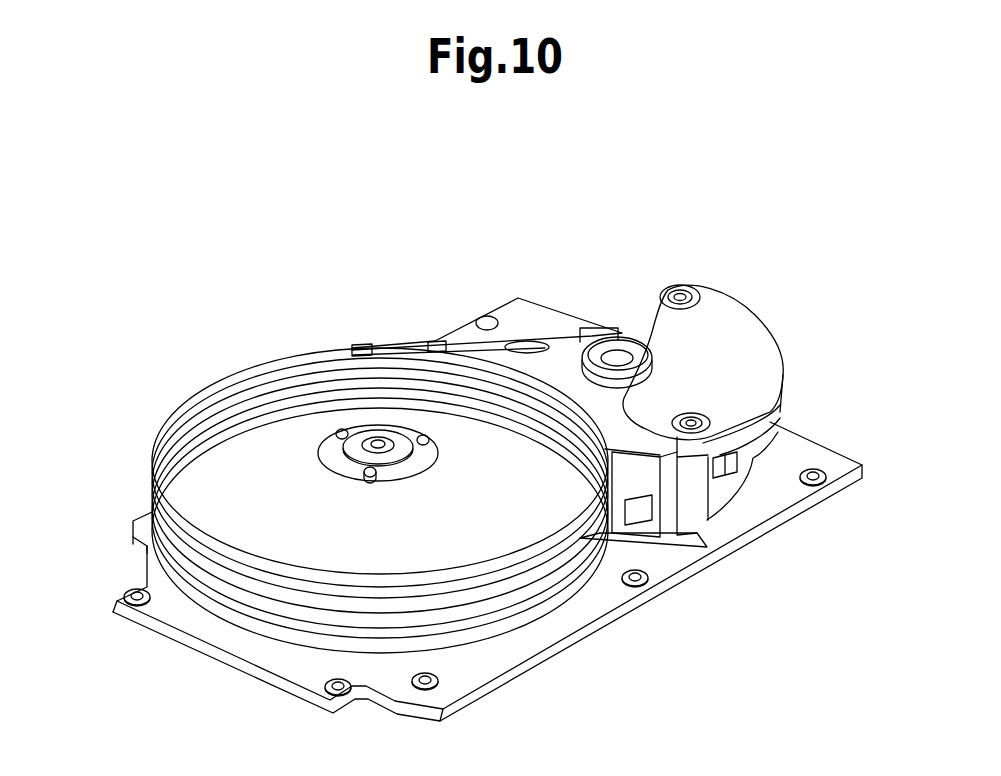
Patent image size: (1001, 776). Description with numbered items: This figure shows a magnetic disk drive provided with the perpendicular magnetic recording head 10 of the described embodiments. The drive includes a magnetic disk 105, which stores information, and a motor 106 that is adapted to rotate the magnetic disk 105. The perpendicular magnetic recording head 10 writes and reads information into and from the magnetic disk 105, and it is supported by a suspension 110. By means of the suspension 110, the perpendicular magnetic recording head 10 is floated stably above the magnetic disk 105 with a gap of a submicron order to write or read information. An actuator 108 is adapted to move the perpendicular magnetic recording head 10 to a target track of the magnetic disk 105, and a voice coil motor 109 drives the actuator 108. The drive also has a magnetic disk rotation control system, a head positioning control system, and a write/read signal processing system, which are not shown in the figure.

The perpendicular magnetic recording head 10 is at (357, 347).
The magnetic disk 105 is at (257, 478).
The motor 106 is at (357, 440).
The actuator 108 is at (620, 355).
The voice coil motor 109 is at (790, 430).
The suspension 110 is at (440, 345).